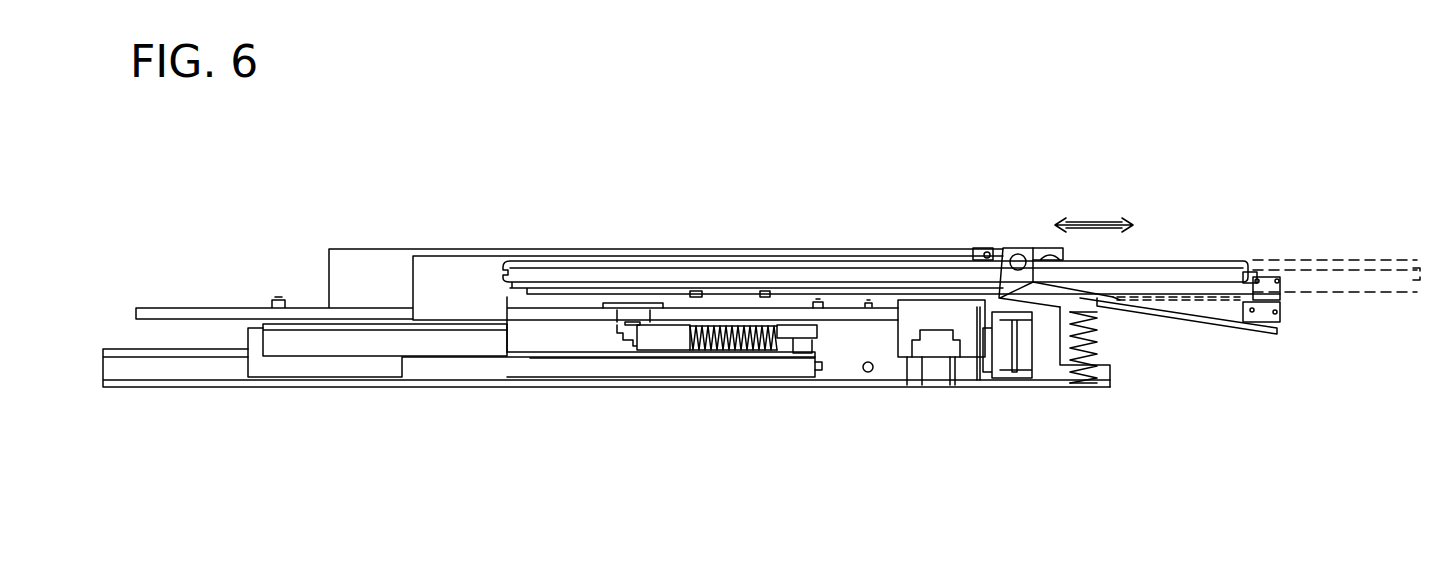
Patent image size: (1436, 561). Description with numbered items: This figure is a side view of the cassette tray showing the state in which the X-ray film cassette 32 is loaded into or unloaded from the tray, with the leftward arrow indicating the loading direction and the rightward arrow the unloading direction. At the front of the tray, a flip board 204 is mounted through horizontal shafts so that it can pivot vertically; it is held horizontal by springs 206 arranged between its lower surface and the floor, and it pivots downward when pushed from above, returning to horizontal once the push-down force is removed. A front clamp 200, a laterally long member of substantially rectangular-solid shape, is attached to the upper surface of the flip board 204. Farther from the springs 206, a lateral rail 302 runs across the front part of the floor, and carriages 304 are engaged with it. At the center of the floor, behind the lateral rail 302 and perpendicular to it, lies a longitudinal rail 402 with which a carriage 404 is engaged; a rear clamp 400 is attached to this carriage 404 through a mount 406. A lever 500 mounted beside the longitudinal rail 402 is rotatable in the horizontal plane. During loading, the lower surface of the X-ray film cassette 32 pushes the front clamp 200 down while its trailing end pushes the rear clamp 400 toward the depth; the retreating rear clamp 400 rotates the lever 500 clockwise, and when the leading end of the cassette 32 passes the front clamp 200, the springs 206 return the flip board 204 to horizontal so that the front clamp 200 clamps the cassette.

The X-ray film cassette 32 is at (786, 271).
The front clamp 200 is at (1265, 318).
The flip board 204 is at (1200, 322).
The spring 206 is at (1095, 370).
The lateral rail 302 is at (937, 340).
The carriage 304 is at (905, 345).
The rear clamp 400 is at (457, 272).
The longitudinal rail 402 is at (180, 370).
The carriage 404 is at (338, 367).
The mount 406 is at (373, 348).
The lever 500 is at (563, 320).